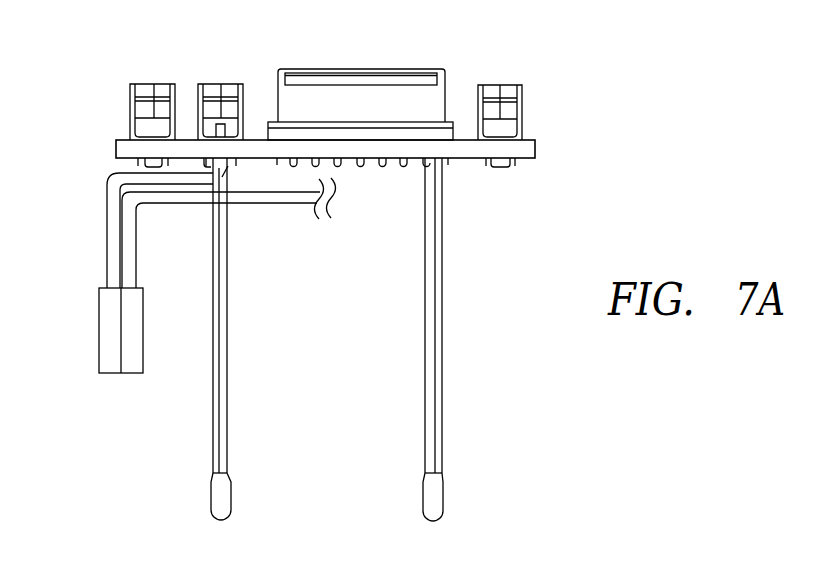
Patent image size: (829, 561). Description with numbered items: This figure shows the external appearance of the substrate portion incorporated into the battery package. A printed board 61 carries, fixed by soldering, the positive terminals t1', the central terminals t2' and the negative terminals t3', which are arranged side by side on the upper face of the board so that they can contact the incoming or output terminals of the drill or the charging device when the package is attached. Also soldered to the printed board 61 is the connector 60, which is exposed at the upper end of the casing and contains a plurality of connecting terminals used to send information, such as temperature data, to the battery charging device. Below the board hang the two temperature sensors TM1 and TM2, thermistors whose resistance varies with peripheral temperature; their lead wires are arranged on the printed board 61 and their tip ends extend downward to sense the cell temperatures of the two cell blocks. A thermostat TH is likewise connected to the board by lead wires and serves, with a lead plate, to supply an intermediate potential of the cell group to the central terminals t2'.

The connector 60 is at (392, 78).
The printed board 61 is at (535, 152).
The positive terminals t1' is at (136, 95).
The central terminals t2' is at (211, 95).
The negative terminals t3' is at (525, 93).
The thermostat TH is at (108, 357).
The temperature sensor TM1 is at (218, 508).
The temperature sensor TM2 is at (427, 508).